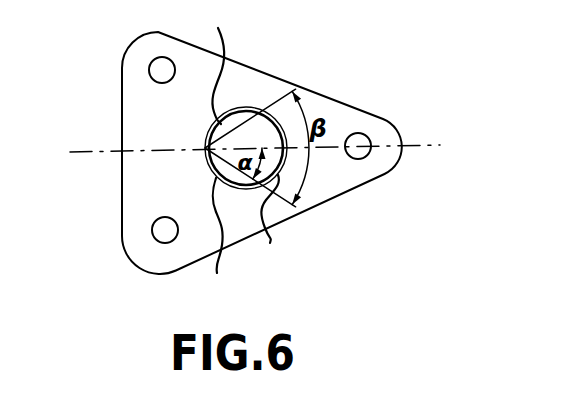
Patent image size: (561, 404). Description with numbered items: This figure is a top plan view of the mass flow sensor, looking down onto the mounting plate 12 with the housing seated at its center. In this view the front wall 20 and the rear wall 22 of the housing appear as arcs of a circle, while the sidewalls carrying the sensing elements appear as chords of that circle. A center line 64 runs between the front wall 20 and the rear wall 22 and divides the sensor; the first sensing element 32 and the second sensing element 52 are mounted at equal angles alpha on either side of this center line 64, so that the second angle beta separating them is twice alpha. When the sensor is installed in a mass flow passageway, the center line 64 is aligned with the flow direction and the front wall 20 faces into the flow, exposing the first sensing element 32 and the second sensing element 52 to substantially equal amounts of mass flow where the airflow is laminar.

The mounting plate 12 is at (273, 70).
The front wall 20 is at (208, 145).
The rear wall 22 is at (282, 222).
The first sensing element 32 is at (213, 62).
The second sensing element 52 is at (213, 243).
The center line 64 is at (83, 153).